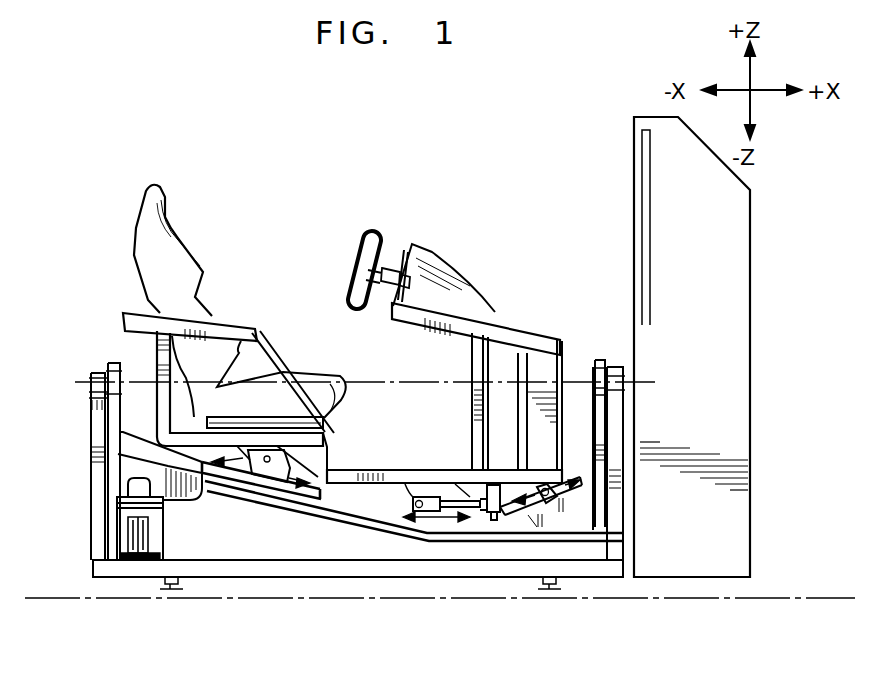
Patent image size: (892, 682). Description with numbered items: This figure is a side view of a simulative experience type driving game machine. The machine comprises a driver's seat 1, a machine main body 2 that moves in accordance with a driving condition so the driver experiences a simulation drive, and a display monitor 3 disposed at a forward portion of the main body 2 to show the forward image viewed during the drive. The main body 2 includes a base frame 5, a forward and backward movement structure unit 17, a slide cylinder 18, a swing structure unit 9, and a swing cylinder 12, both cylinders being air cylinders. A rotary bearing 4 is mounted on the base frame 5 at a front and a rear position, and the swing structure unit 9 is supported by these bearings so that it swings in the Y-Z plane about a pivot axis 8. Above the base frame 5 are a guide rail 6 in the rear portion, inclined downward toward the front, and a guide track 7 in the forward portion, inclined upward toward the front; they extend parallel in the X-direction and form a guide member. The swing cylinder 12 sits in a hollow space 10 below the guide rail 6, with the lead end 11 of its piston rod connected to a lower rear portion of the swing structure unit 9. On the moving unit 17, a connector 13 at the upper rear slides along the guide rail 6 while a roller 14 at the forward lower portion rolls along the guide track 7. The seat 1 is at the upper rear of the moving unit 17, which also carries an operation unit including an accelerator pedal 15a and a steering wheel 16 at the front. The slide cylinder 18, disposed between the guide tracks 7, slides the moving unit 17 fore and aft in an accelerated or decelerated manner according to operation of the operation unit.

The driver's seat 1 is at (163, 205).
The machine main body 2 is at (384, 188).
The display monitor 3 is at (634, 188).
The rotary bearing 4 is at (97, 371).
The base frame 5 is at (317, 570).
The guide rail 6 is at (306, 501).
The guide track 7 is at (580, 477).
The pivot axis 8 is at (362, 380).
The swing structure unit 9 is at (404, 536).
The hollow space 10 is at (202, 540).
The lead end of piston rod 11 is at (130, 485).
The swing cylinder 12 is at (130, 538).
The connector 13 is at (260, 493).
The roller 14 is at (552, 503).
The accelerator pedal 15a is at (505, 437).
The steering wheel 16 is at (366, 248).
The forward and backward movement structure unit 17 is at (527, 312).
The slide cylinder 18 is at (498, 522).